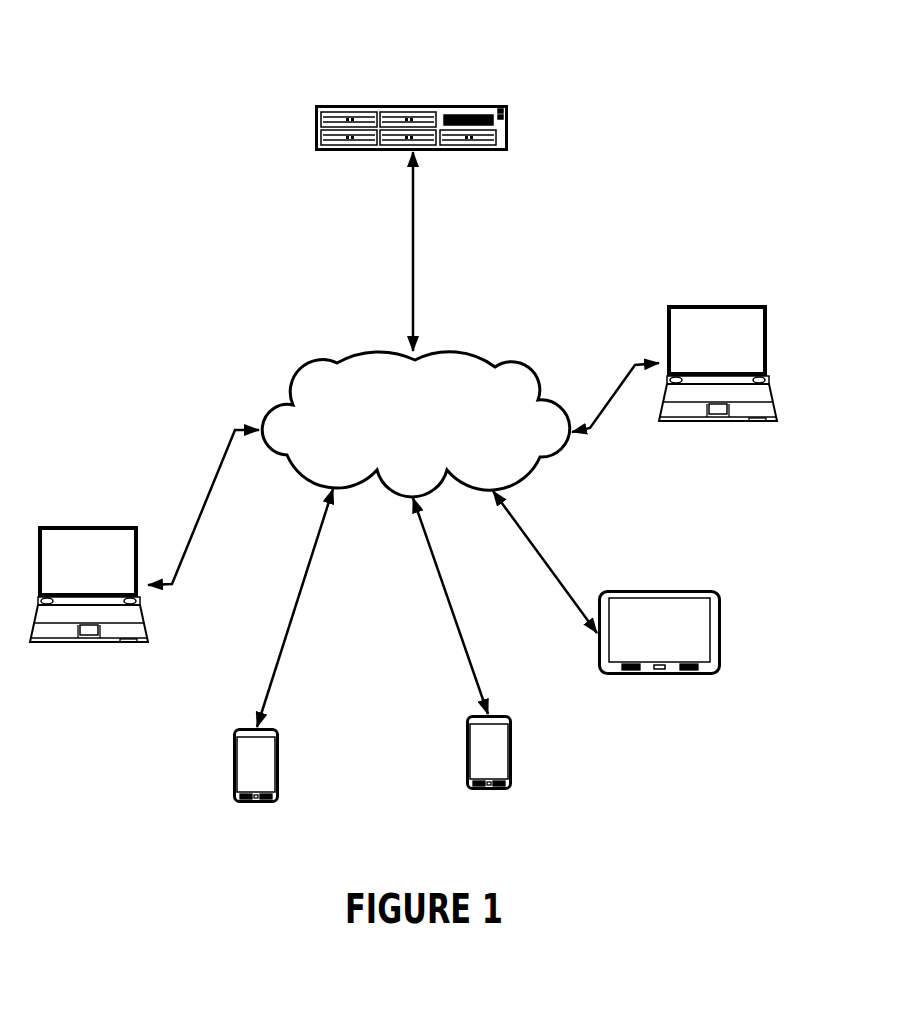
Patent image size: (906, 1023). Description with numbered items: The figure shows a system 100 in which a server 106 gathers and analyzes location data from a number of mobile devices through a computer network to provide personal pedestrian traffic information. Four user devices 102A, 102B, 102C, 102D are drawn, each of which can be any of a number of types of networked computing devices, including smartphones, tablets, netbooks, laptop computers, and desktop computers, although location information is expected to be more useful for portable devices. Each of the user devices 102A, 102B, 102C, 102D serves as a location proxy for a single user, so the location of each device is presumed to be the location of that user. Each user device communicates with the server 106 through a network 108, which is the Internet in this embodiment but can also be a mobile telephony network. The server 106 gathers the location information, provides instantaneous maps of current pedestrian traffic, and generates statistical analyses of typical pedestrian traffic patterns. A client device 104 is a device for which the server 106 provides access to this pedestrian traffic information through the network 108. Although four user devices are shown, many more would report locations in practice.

The system 100 is at (589, 46).
The user device 102A is at (90, 526).
The user device 102B is at (232, 765).
The user device 102C is at (488, 790).
The user device 102D is at (658, 675).
The client device 104 is at (718, 305).
The server 106 is at (412, 105).
The network 108 is at (416, 424).